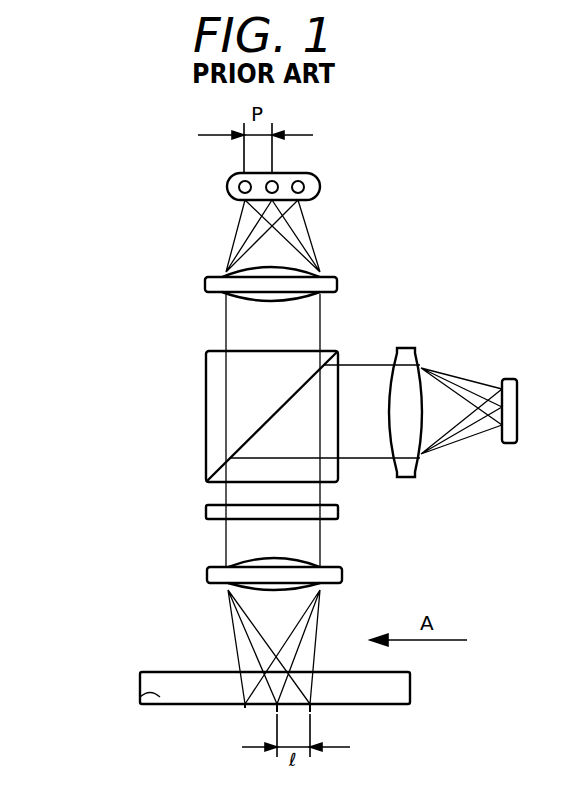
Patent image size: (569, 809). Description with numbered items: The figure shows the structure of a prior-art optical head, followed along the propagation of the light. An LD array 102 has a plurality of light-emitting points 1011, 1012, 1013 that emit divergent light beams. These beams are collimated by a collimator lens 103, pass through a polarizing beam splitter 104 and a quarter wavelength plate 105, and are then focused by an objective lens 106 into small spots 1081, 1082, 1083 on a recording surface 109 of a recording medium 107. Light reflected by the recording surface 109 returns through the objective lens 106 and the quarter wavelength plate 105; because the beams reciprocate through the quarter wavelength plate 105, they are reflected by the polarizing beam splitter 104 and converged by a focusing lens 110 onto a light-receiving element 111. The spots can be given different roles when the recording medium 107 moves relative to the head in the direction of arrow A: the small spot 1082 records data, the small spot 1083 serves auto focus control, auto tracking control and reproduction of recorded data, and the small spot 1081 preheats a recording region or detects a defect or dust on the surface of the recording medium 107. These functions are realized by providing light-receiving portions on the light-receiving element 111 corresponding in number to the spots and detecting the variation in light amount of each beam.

The light-emitting point 1011 is at (235, 173).
The light-emitting point 1012 is at (284, 172).
The light-emitting point 1013 is at (312, 174).
The LD array 102 is at (227, 193).
The collimator lens 103 is at (205, 290).
The polarizing beam splitter 104 is at (215, 372).
The quarter wavelength plate 105 is at (206, 513).
The objective lens 106 is at (207, 580).
The recording medium 107 is at (175, 673).
The small spot 1081 is at (320, 704).
The small spot 1082 is at (276, 707).
The small spot 1083 is at (243, 706).
The recording surface 109 is at (140, 697).
The focusing lens 110 is at (412, 348).
The light-receiving element 111 is at (511, 379).